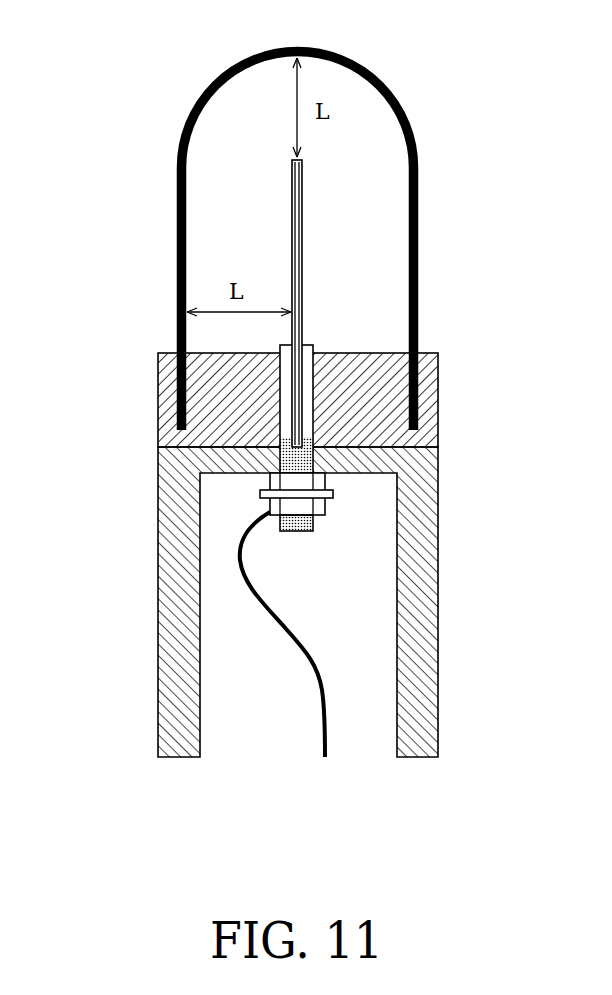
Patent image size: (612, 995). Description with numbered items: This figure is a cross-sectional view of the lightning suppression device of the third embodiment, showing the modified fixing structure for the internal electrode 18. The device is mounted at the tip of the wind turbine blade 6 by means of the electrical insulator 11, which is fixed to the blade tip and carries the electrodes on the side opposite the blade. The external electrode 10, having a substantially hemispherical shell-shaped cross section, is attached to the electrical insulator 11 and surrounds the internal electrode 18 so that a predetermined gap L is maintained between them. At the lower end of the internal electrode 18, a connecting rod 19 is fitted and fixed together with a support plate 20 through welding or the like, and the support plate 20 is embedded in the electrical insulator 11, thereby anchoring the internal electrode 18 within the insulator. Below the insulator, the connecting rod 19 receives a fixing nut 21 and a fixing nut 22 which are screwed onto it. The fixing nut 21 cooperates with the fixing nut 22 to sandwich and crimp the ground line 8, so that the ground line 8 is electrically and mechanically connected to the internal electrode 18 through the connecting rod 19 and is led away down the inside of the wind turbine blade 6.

The wind turbine blade 6 is at (158, 580).
The ground line 8 is at (317, 700).
The external electrode 10 is at (392, 92).
The electrical insulator 11 is at (158, 428).
The internal electrode 18 is at (300, 247).
The connecting rod 19 is at (302, 531).
The support plate 20 is at (300, 402).
The fixing nut 21 is at (318, 482).
The fixing nut 22 is at (318, 513).